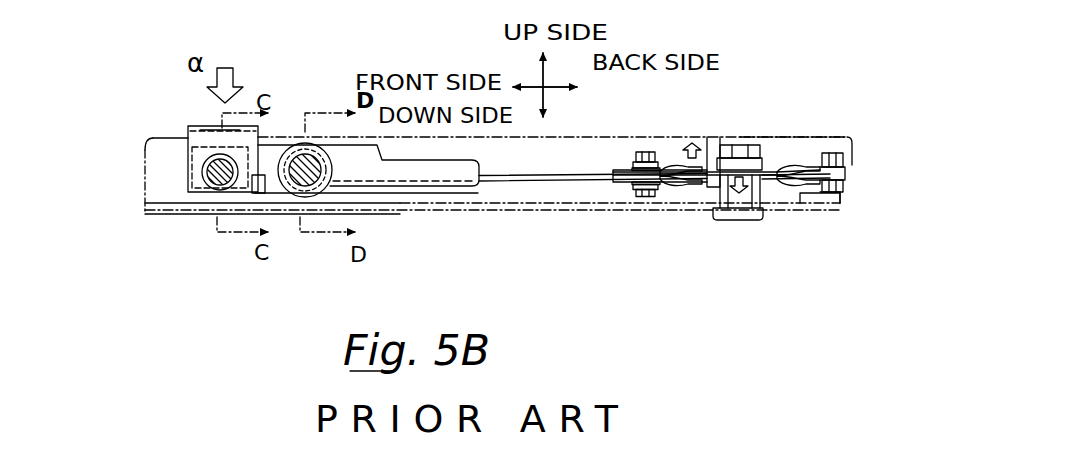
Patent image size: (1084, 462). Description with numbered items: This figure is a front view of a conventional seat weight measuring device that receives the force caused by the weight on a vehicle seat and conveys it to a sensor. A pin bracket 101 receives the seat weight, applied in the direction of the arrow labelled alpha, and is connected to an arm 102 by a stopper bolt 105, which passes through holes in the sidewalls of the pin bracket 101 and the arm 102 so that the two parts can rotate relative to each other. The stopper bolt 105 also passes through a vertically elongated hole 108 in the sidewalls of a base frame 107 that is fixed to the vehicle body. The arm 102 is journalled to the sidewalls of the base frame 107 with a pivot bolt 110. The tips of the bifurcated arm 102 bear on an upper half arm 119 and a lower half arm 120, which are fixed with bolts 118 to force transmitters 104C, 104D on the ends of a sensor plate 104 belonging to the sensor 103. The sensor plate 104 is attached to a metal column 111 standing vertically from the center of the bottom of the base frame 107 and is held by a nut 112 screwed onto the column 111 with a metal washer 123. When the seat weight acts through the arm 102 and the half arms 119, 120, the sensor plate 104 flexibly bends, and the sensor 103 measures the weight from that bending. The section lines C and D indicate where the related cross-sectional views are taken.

The pin bracket 101 is at (200, 130).
The arm 102 is at (447, 186).
The sensor 103 is at (762, 134).
The sensor plate 104 is at (707, 140).
The force transmitter 104C is at (620, 183).
The force transmitter 104D is at (847, 178).
The stopper bolt 105 is at (200, 192).
The base frame 107 is at (147, 213).
The vertically elongated hole 108 is at (226, 184).
The pivot bolt 110 is at (318, 167).
The metal column 111 is at (720, 195).
The nut 112 is at (738, 145).
The bolt 118 is at (643, 151).
The upper half arm 119 is at (677, 164).
The lower half arm 120 is at (670, 193).
The metal washer 123 is at (767, 168).